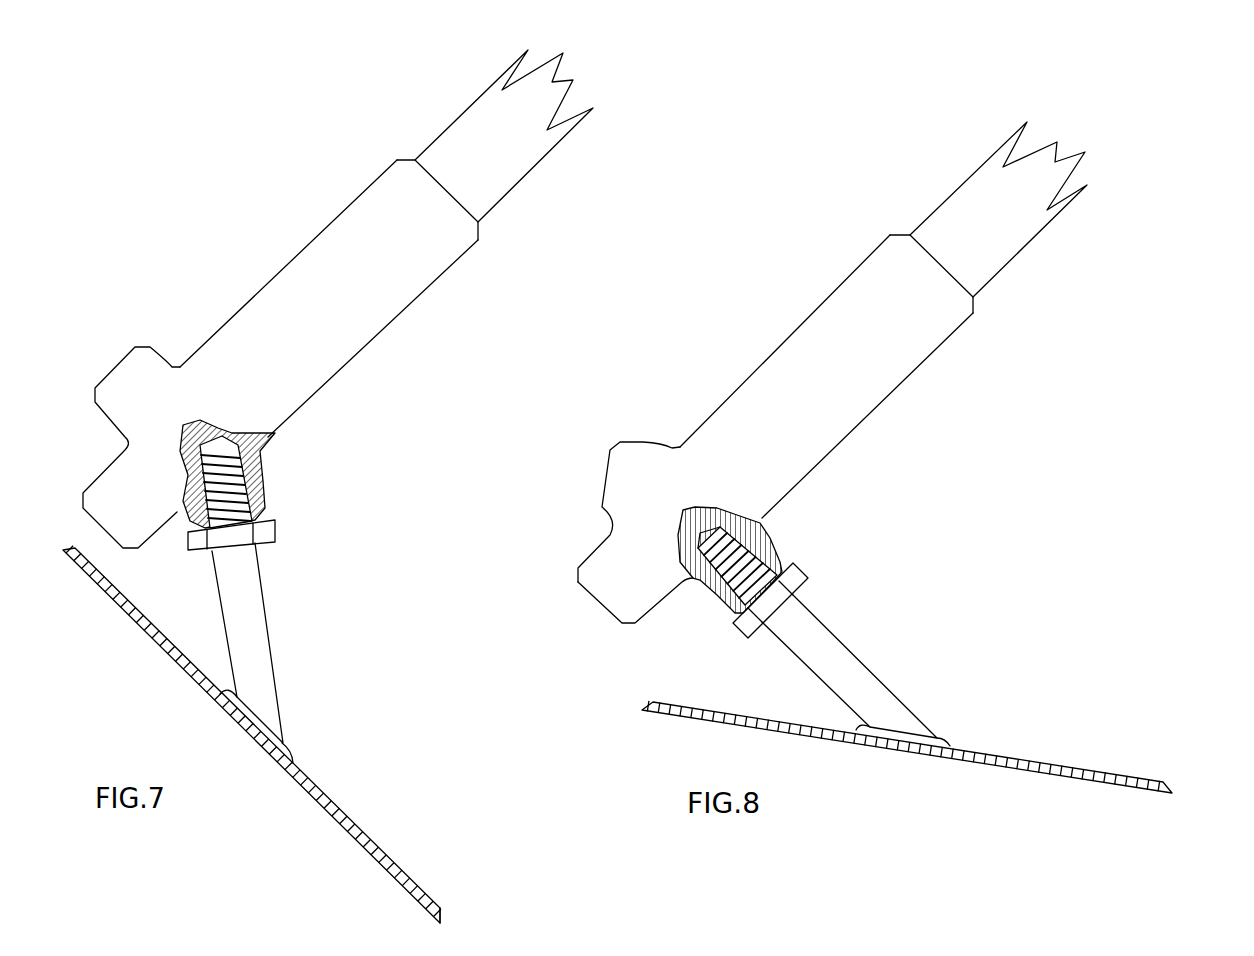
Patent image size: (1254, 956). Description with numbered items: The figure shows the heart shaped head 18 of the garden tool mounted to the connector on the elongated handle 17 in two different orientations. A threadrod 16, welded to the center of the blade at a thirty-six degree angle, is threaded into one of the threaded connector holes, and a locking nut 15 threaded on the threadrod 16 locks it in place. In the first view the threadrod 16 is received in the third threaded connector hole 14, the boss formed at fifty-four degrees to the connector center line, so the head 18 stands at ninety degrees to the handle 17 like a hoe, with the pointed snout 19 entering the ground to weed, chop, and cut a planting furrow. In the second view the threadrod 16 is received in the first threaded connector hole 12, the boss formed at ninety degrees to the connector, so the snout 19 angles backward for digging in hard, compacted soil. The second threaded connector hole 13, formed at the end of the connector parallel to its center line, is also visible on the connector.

In FIG. 8, the first threaded connector hole 12 is at (767, 563).
In FIG. 8, the second threaded connector hole 13 is at (603, 608).
In FIG. 7, the third threaded connector hole 14 is at (230, 503).
In FIG. 8, the third threaded connector hole 14 is at (603, 477).
In FIG. 7, the locking nut 15 is at (257, 533).
In FIG. 8, the locking nut 15 is at (770, 597).
In FIG. 7, the threadrod 16 is at (260, 657).
In FIG. 8, the threadrod 16 is at (870, 688).
In FIG. 7, the handle 17 is at (502, 153).
In FIG. 8, the handle 17 is at (995, 223).
In FIG. 7, the heart shaped head 18 is at (330, 795).
In FIG. 7, the pointed snout 19 is at (440, 923).
In FIG. 8, the pointed snout 19 is at (1172, 793).